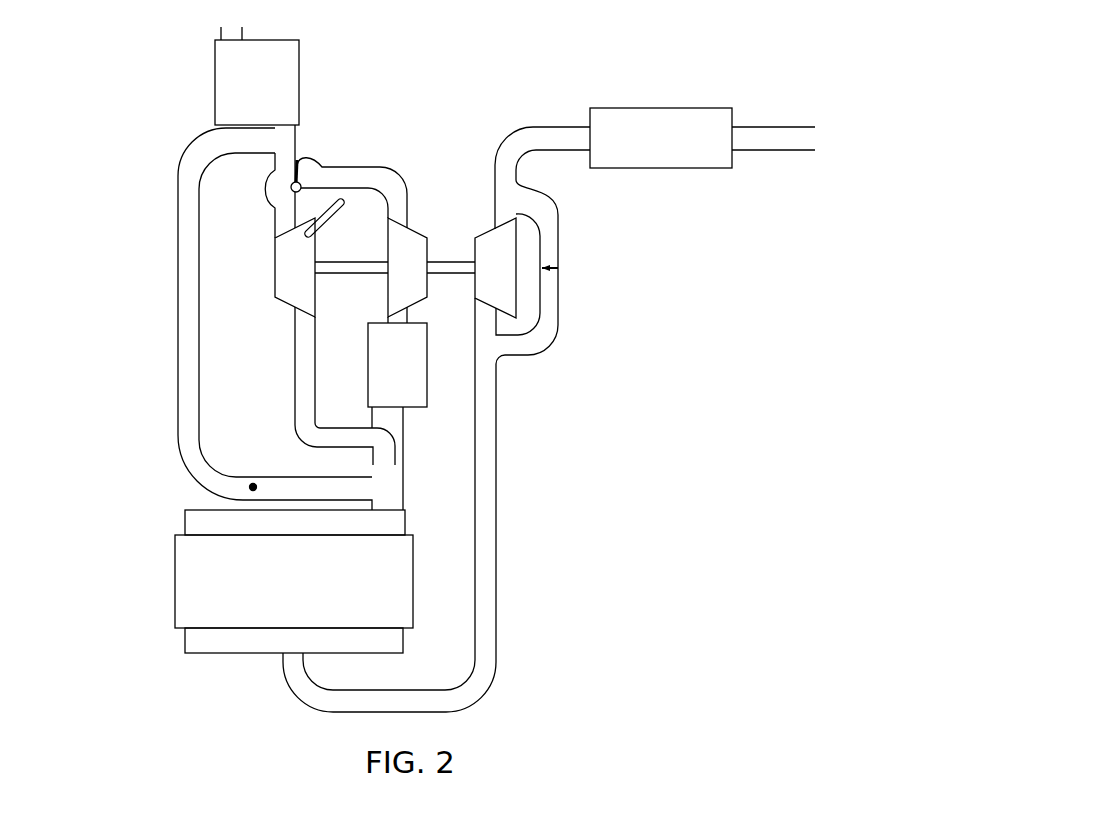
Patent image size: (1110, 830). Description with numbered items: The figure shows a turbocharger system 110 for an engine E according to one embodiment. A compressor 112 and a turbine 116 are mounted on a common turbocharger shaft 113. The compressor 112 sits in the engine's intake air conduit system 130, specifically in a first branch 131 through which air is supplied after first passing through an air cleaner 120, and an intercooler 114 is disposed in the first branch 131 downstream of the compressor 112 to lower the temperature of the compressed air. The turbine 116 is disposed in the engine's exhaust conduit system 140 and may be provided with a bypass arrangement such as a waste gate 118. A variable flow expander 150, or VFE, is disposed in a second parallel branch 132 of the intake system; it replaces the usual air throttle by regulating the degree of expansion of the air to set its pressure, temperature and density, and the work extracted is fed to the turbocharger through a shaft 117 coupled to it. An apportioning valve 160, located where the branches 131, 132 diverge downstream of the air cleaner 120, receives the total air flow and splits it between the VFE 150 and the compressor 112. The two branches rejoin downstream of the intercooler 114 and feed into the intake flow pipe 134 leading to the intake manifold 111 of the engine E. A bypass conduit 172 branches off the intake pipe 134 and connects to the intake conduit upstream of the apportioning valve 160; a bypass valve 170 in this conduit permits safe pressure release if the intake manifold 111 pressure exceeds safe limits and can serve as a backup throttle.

The turbocharger system 110 is at (603, 328).
The intake manifold 111 is at (198, 525).
The compressor 112 is at (408, 247).
The shaft 113 is at (442, 265).
The intercooler 114 is at (398, 382).
The turbine 116 is at (500, 273).
The shaft 117 is at (355, 265).
The waste gate 118 is at (555, 260).
The air cleaner 120 is at (272, 70).
The intake air conduit system 130 is at (343, 163).
The first branch 131 is at (397, 205).
The second parallel branch 132 is at (303, 388).
The intake flow pipe 134 is at (388, 502).
The exhaust conduit system 140 is at (485, 623).
The variable flow expander 150 is at (292, 272).
The apportioning valve 160 is at (283, 170).
The bypass valve 170 is at (243, 486).
The bypass conduit 172 is at (186, 435).
The engine E is at (197, 577).